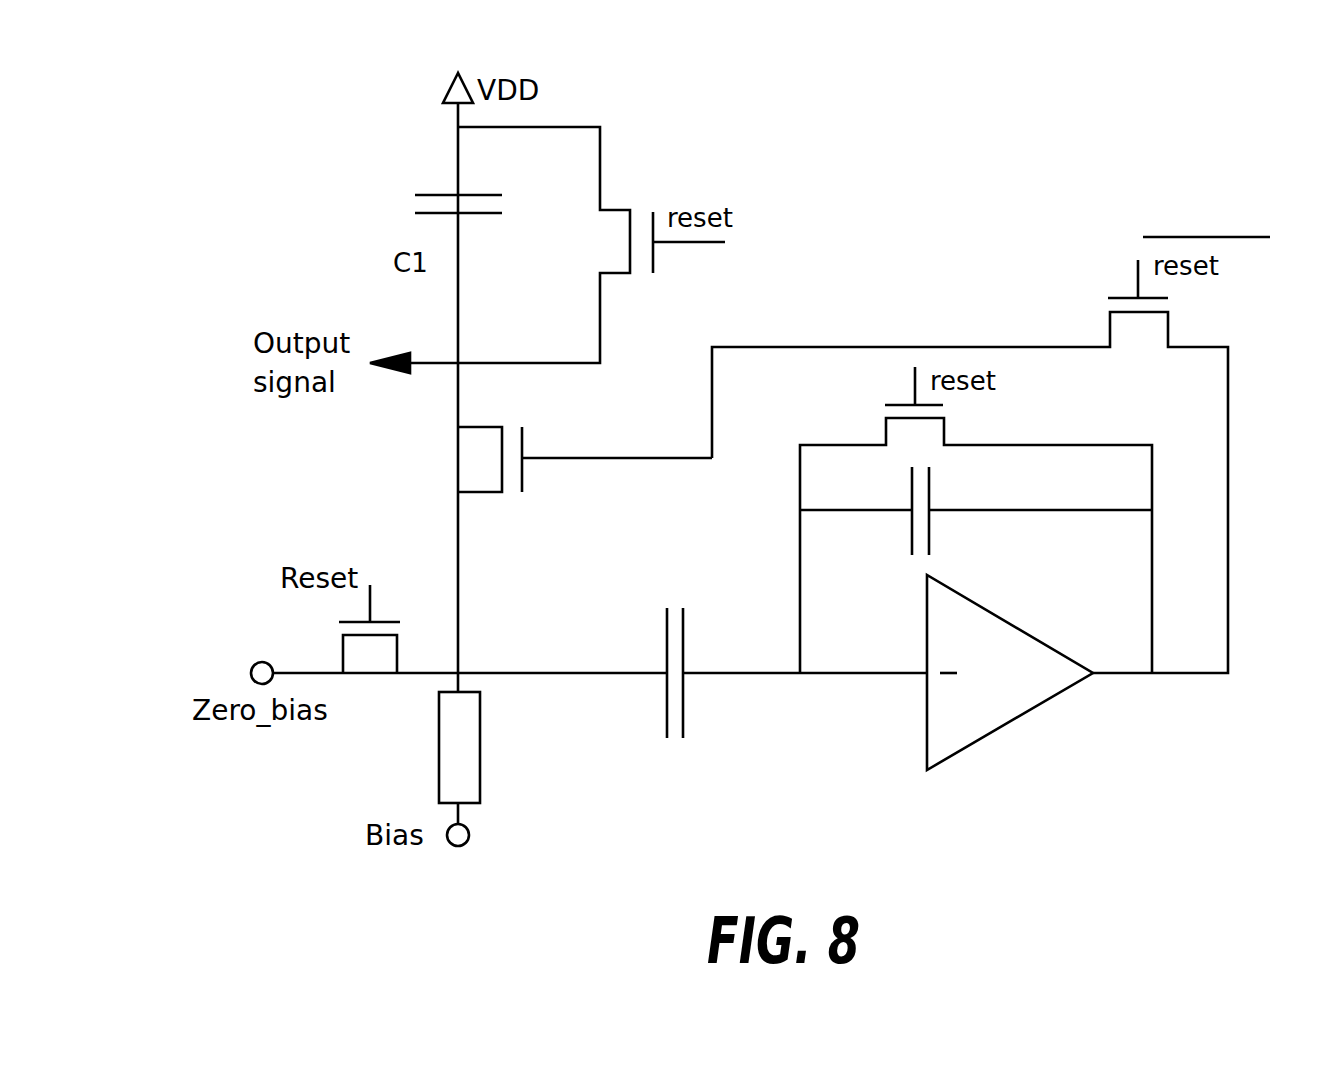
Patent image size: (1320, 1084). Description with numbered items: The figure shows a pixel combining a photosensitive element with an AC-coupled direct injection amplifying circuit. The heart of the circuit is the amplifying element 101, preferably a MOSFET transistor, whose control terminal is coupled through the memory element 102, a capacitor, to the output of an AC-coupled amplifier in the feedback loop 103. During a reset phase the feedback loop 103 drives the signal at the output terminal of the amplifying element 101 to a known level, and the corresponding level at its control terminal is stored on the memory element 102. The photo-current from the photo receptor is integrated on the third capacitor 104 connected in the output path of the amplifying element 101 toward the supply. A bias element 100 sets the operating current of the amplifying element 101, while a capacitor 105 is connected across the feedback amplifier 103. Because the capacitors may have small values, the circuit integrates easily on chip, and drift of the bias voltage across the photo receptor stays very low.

The bias current source / load resistor 100 is at (480, 770).
The amplifying element 101 is at (460, 463).
The memory element 102 is at (667, 639).
The feedback loop 103 is at (990, 728).
The third capacitor 104 is at (432, 193).
The feedback capacitor 105 is at (930, 527).